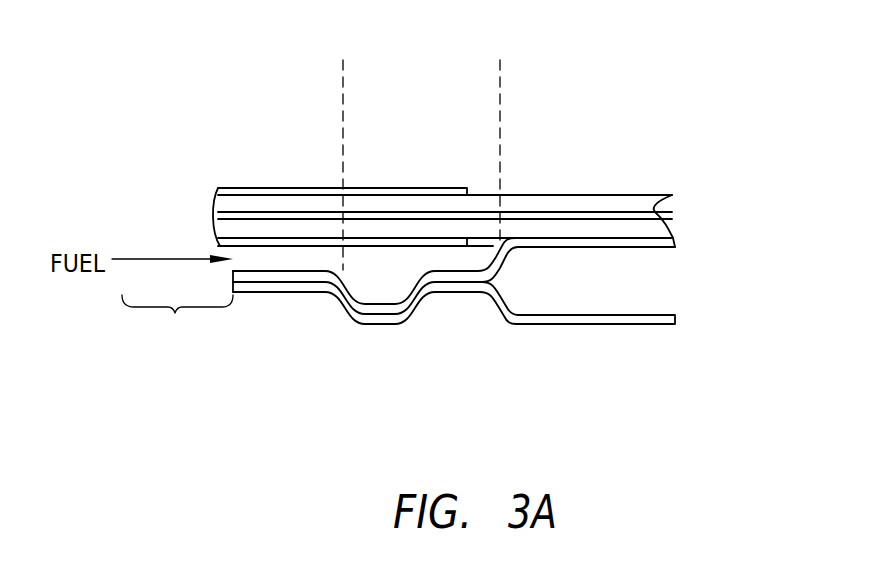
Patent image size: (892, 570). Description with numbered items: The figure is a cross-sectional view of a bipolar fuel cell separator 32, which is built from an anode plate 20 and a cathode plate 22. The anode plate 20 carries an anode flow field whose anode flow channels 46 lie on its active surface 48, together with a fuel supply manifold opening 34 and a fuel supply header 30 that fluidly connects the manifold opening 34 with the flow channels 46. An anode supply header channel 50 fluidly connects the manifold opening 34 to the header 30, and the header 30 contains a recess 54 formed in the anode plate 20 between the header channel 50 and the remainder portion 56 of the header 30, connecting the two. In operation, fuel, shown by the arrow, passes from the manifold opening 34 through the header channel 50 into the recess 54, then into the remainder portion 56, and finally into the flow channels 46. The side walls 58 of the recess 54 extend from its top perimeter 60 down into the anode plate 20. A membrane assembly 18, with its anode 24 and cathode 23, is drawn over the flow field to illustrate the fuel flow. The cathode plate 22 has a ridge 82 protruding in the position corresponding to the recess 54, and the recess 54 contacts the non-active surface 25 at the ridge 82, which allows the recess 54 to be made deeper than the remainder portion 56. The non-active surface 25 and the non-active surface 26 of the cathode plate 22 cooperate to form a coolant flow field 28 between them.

The membrane assembly 18 is at (712, 190).
The anode plate 20 is at (257, 278).
The cathode plate 22 is at (293, 284).
The cathode 23 is at (652, 200).
The anode 24 is at (608, 227).
The non-active surface 25 is at (504, 263).
The non-active surface of cathode plate 26 is at (502, 298).
The coolant flow field 28 is at (630, 292).
The fuel supply header 30 is at (500, 60).
The bipolar fuel cell separator 32 is at (712, 240).
The fuel supply manifold opening 34 is at (177, 321).
The anode flow channels 46 is at (542, 246).
The active surface 48 is at (519, 240).
The anode supply header channel 50 is at (250, 262).
The recess 54 is at (385, 282).
The remainder portion 56 is at (456, 243).
The side walls 58 is at (348, 280).
The top perimeter 60 is at (338, 266).
The ridge 82 is at (395, 321).